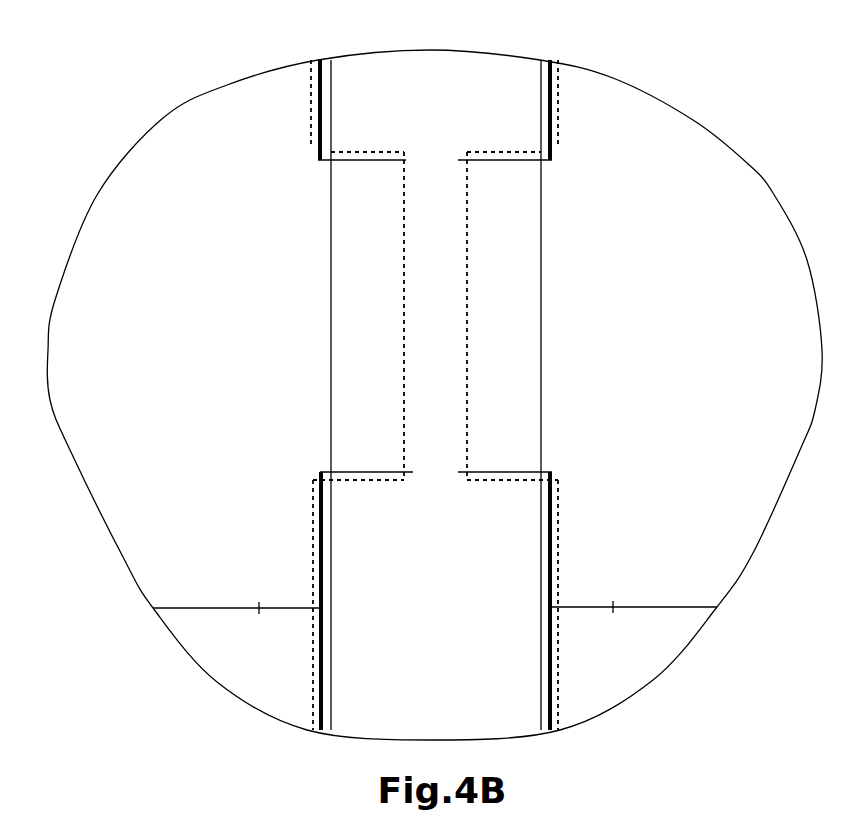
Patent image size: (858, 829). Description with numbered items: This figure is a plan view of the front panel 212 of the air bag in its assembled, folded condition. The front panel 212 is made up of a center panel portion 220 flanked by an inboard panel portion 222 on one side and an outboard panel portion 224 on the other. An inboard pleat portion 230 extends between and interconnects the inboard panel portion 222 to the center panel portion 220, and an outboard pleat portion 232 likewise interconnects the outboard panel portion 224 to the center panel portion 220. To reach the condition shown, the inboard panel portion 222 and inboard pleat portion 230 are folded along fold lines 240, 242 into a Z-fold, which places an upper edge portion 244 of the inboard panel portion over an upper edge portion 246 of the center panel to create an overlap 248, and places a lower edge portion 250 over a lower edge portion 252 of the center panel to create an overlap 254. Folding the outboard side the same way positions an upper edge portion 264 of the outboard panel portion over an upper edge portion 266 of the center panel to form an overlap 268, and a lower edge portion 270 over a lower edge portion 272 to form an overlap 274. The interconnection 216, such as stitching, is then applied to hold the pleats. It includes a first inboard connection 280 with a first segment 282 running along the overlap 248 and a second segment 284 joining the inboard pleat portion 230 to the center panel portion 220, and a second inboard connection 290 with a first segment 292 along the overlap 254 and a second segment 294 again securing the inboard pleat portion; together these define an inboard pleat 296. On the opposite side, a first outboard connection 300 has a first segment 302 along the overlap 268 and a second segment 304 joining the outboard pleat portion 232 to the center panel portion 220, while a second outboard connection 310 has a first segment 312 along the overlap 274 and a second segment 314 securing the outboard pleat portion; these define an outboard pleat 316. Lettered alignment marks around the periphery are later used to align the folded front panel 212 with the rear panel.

The front panel 212 is at (130, 108).
The interconnection 216 is at (314, 117).
The center panel portion 220 is at (430, 88).
The inboard panel portion 222 is at (150, 245).
The outboard panel portion 224 is at (720, 242).
The inboard pleat portion 230 is at (404, 281).
The outboard pleat portion 232 is at (467, 281).
The fold line 240 is at (542, 330).
The fold line 242 is at (330, 328).
The upper edge portion 244 is at (322, 108).
The upper edge portion 246 is at (310, 143).
The overlap 248 is at (316, 105).
The lower edge portion 250 is at (335, 533).
The lower edge portion 252 is at (312, 553).
The overlap 254 is at (325, 583).
The upper edge portion 264 is at (548, 108).
The upper edge portion 266 is at (560, 145).
The overlap 268 is at (553, 105).
The lower edge portion 270 is at (540, 533).
The lower edge portion 272 is at (560, 553).
The overlap 274 is at (548, 583).
The first inboard connection 280 is at (322, 93).
The first segment 282 is at (322, 130).
The second segment 284 is at (357, 160).
The second inboard connection 290 is at (318, 590).
The first segment 292 is at (318, 490).
The second segment 294 is at (361, 470).
The inboard pleat 296 is at (292, 318).
The first outboard connection 300 is at (548, 92).
The first segment 302 is at (548, 131).
The second segment 304 is at (513, 160).
The second outboard connection 310 is at (553, 590).
The first segment 312 is at (553, 490).
The second segment 314 is at (512, 470).
The outboard pleat 316 is at (580, 318).